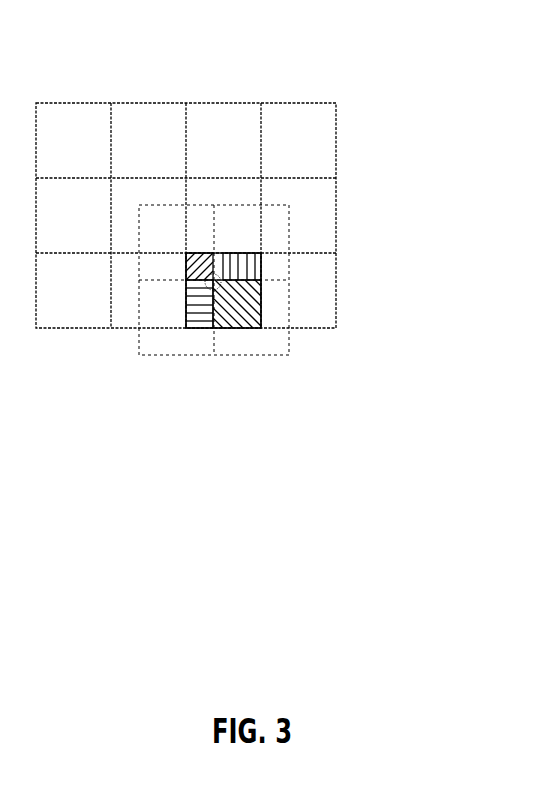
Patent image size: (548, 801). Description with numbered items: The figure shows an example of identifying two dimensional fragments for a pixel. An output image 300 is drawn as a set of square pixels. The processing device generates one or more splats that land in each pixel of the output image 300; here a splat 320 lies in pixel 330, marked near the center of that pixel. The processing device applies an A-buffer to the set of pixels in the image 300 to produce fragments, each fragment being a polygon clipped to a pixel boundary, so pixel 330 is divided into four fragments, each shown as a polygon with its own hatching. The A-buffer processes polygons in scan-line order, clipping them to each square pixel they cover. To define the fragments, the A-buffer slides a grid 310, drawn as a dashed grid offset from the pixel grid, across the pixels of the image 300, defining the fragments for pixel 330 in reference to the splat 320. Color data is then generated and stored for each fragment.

The output image 300 is at (382, 56).
The grid 310 is at (300, 202).
The splat 320 is at (220, 296).
The pixel 330 is at (188, 339).